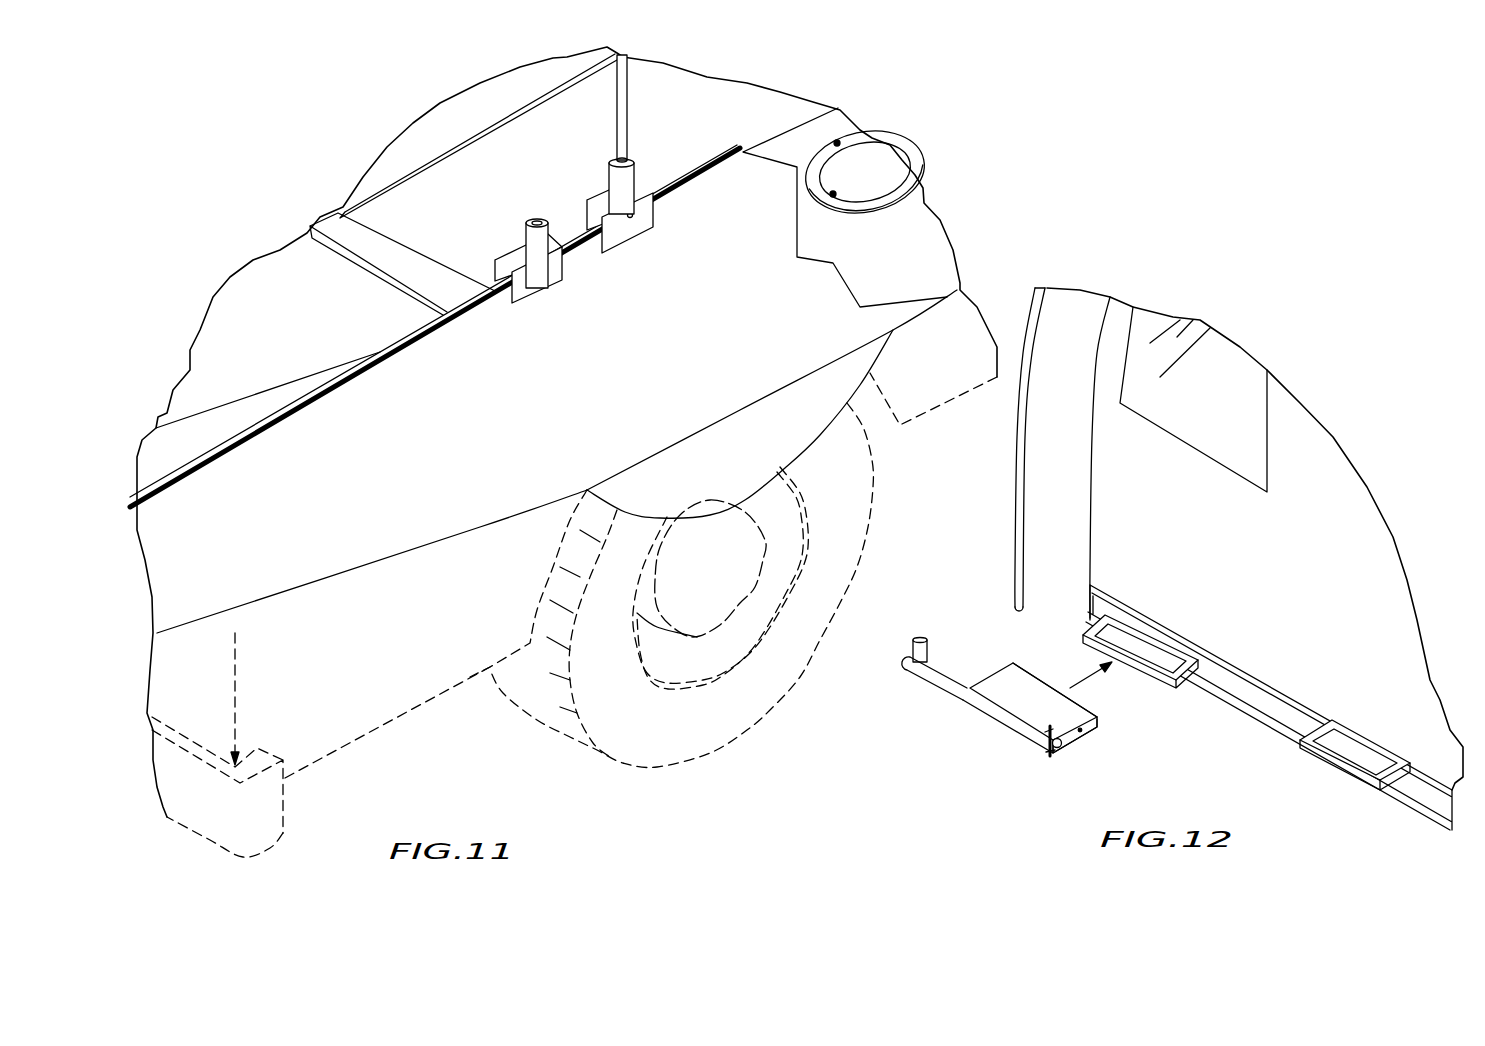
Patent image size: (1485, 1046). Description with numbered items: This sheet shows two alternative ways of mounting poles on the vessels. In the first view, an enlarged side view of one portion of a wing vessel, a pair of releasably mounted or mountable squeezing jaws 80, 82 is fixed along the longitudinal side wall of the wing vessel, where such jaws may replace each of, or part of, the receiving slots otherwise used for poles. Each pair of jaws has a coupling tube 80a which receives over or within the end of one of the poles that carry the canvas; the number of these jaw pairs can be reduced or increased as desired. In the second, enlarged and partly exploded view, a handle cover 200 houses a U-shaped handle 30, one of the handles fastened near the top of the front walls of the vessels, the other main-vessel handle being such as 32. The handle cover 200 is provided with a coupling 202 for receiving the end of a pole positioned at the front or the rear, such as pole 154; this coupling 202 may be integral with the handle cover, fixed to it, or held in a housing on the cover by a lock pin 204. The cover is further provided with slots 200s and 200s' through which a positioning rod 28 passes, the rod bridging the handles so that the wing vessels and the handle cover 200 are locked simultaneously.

In FIG. 11, the squeezing jaw 80 is at (587, 208).
In FIG. 11, the coupling tube 80a is at (645, 158).
In FIG. 11, the squeezing jaw 82 is at (562, 278).
In FIG. 12, the pole 154 is at (1013, 570).
In FIG. 12, the positioning rod 28 is at (1280, 733).
In FIG. 12, the U-shaped handle 30 is at (1160, 685).
In FIG. 12, the U-shaped handle 32 is at (1380, 791).
In FIG. 12, the handle cover 200 is at (1030, 708).
In FIG. 12, the slot 200s is at (1123, 746).
In FIG. 12, the slot 200s' is at (997, 666).
In FIG. 12, the coupling 202 is at (910, 650).
In FIG. 12, the lock pin 204 is at (1050, 757).